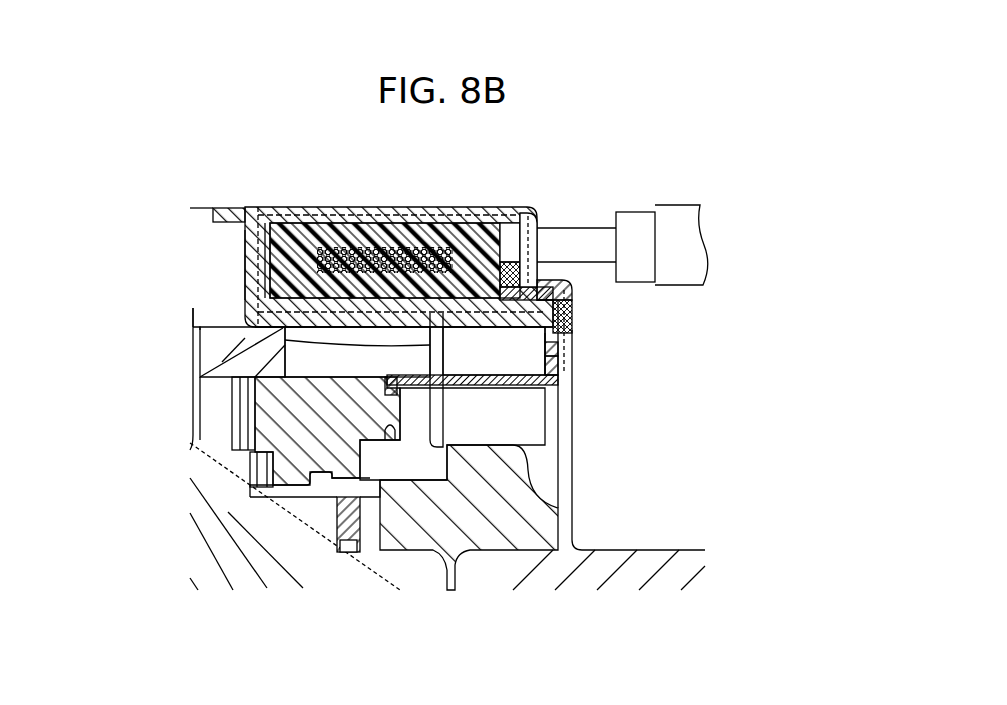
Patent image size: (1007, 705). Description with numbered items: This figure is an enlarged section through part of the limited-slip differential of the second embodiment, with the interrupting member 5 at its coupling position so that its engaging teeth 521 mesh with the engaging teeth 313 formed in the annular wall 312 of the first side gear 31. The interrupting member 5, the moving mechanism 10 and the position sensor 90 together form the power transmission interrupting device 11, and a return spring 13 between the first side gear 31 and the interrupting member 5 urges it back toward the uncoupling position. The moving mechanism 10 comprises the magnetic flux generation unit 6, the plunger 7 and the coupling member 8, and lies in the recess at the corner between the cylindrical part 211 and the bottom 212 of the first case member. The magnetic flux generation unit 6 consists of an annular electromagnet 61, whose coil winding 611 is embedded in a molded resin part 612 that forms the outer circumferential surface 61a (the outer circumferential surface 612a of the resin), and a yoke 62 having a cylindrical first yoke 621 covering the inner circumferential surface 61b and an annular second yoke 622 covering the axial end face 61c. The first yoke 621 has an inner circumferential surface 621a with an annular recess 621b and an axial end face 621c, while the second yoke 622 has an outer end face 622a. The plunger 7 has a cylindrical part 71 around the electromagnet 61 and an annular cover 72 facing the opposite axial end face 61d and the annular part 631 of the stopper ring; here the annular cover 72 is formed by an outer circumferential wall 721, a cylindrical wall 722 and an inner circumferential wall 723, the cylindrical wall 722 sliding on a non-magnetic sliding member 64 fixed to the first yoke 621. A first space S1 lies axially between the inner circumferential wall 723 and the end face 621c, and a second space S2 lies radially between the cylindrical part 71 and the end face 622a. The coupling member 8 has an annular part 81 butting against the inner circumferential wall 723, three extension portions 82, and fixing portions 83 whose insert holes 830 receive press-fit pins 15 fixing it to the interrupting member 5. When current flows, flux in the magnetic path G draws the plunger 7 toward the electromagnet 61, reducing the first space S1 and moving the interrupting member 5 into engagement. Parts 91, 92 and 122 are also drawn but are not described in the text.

The moving mechanism 10 is at (566, 180).
The interrupting member 5 is at (318, 455).
The magnetic flux generation unit 6 is at (238, 335).
The plunger 7 is at (392, 215).
The coupling member 8 is at (640, 395).
The power transmission interrupting device 11 is at (410, 465).
The return spring 13 is at (250, 480).
The press-fit pin 15 is at (400, 452).
The first side gear 31 is at (220, 535).
The electromagnet 61 is at (410, 164).
The outer circumferential surface 61a is at (320, 213).
The inner circumferential surface 61b is at (250, 313).
The axial end face 61c is at (505, 238).
The axial end face 61d is at (253, 252).
The yoke 62 is at (232, 213).
The sliding member 64 is at (493, 332).
The cylindrical part 71 is at (358, 240).
The annular cover 72 is at (648, 290).
The annular part 81 is at (552, 345).
The extension portions 82 is at (552, 378).
The fixing portions 83 is at (397, 397).
The position sensor 90 is at (702, 296).
The connector body 91 is at (617, 212).
The cable 92 is at (672, 205).
The fixing portion 122 is at (352, 500).
The cylindrical part 211 is at (200, 326).
The bottom 212 is at (513, 518).
The annular wall 312 is at (215, 432).
The engaging teeth 313 is at (240, 398).
The engaging teeth 521 is at (252, 475).
The coil winding 611 is at (392, 240).
The molded resin part 612 is at (420, 238).
The outer circumferential surface 612a is at (482, 220).
The first yoke 621 is at (347, 336).
The inner circumferential surface 621a is at (397, 330).
The annular recess 621b is at (440, 385).
The axial end face 621c is at (548, 330).
The second yoke 622 is at (253, 272).
The end face 622a is at (258, 210).
The annular part 631 is at (522, 278).
The outer circumferential wall 721 is at (540, 255).
The cylindrical wall 722 is at (548, 293).
The inner circumferential wall 723 is at (565, 312).
The insert hole 830 is at (386, 445).
The magnetic path G is at (257, 233).
The first space S1 is at (562, 336).
The second space S2 is at (260, 210).